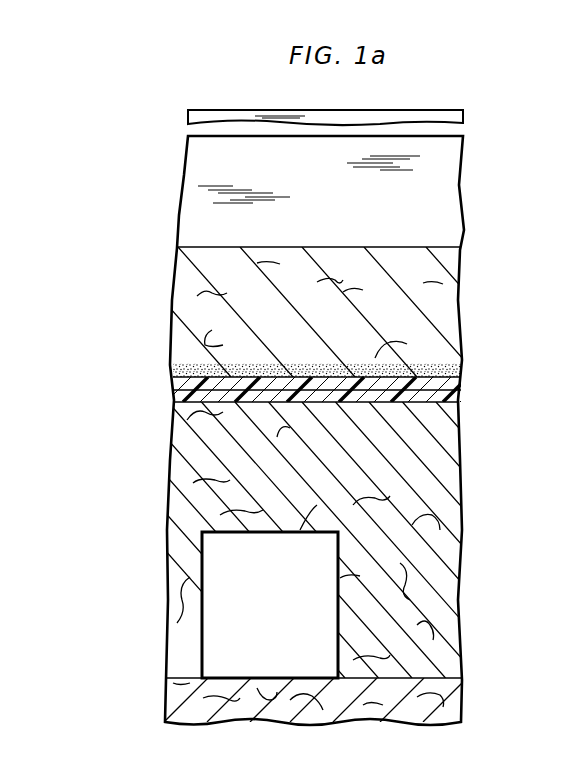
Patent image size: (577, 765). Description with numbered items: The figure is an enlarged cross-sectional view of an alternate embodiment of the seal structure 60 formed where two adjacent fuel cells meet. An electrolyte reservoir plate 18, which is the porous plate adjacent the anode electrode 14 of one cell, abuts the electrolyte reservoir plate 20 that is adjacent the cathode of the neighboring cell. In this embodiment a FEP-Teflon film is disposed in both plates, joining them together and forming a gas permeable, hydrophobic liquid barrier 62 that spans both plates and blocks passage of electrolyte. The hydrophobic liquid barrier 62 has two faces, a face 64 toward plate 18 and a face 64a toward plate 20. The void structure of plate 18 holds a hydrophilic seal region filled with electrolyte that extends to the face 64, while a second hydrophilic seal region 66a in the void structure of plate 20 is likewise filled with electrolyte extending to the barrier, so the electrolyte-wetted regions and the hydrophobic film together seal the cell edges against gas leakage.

The electrolyte reservoir plate 20 is at (180, 109).
The electrolyte reservoir plate 18 is at (160, 677).
The anode electrode 14 is at (450, 708).
The seal structure 60 is at (343, 404).
The hydrophilic seal region 66a is at (452, 373).
The hydrophobic liquid barrier 62 is at (452, 398).
The face 64 is at (333, 397).
The face 64a is at (324, 383).